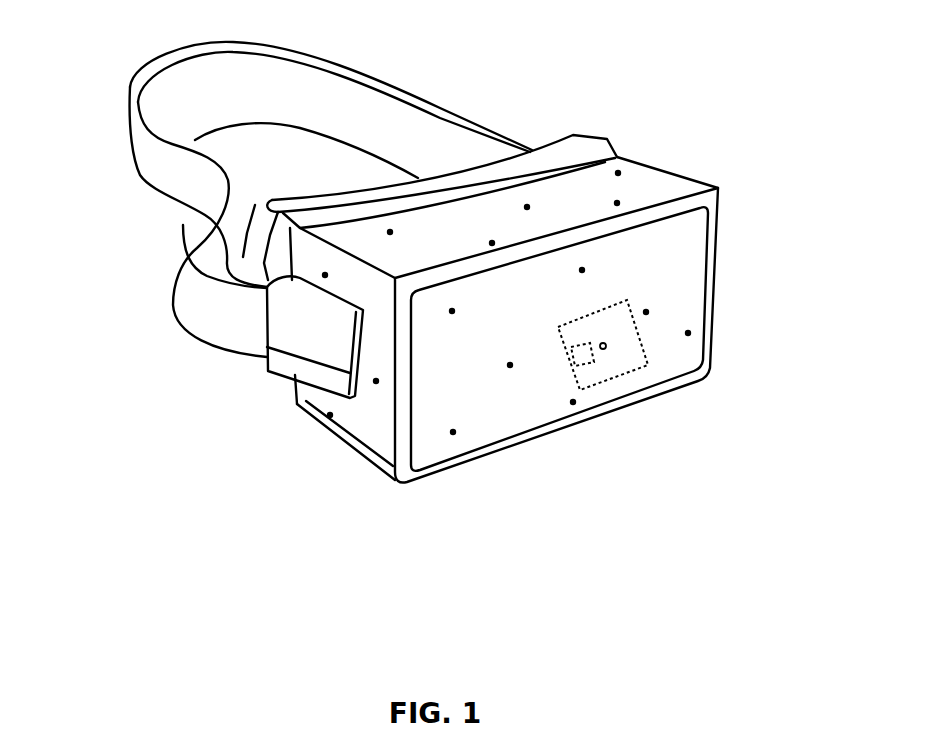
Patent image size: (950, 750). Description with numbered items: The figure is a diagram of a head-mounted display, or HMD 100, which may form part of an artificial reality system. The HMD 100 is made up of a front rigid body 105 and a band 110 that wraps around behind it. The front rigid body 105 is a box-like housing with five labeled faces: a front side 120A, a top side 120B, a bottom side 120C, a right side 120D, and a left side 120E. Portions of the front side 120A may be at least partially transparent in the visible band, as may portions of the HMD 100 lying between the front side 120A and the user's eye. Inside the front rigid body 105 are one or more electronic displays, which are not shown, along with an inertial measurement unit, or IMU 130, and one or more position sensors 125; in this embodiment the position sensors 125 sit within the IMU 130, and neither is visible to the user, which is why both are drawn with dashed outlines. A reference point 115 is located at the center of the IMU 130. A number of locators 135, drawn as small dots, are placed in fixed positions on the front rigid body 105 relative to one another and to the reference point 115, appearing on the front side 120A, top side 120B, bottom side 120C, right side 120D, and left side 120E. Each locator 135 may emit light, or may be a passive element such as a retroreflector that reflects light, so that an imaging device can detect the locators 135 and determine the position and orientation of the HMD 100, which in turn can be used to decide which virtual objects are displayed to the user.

The HMD 100 is at (10, 42).
The front rigid body 105 is at (718, 185).
The band 110 is at (430, 104).
The reference point 115 is at (605, 354).
The front side 120A is at (433, 435).
The top side 120B is at (367, 232).
The bottom side 120C is at (328, 456).
The right side 120D is at (368, 413).
The left side 120E is at (687, 176).
The position sensors 125 is at (584, 362).
The inertial measurement unit 130 is at (652, 359).
The locators 135 is at (692, 331).